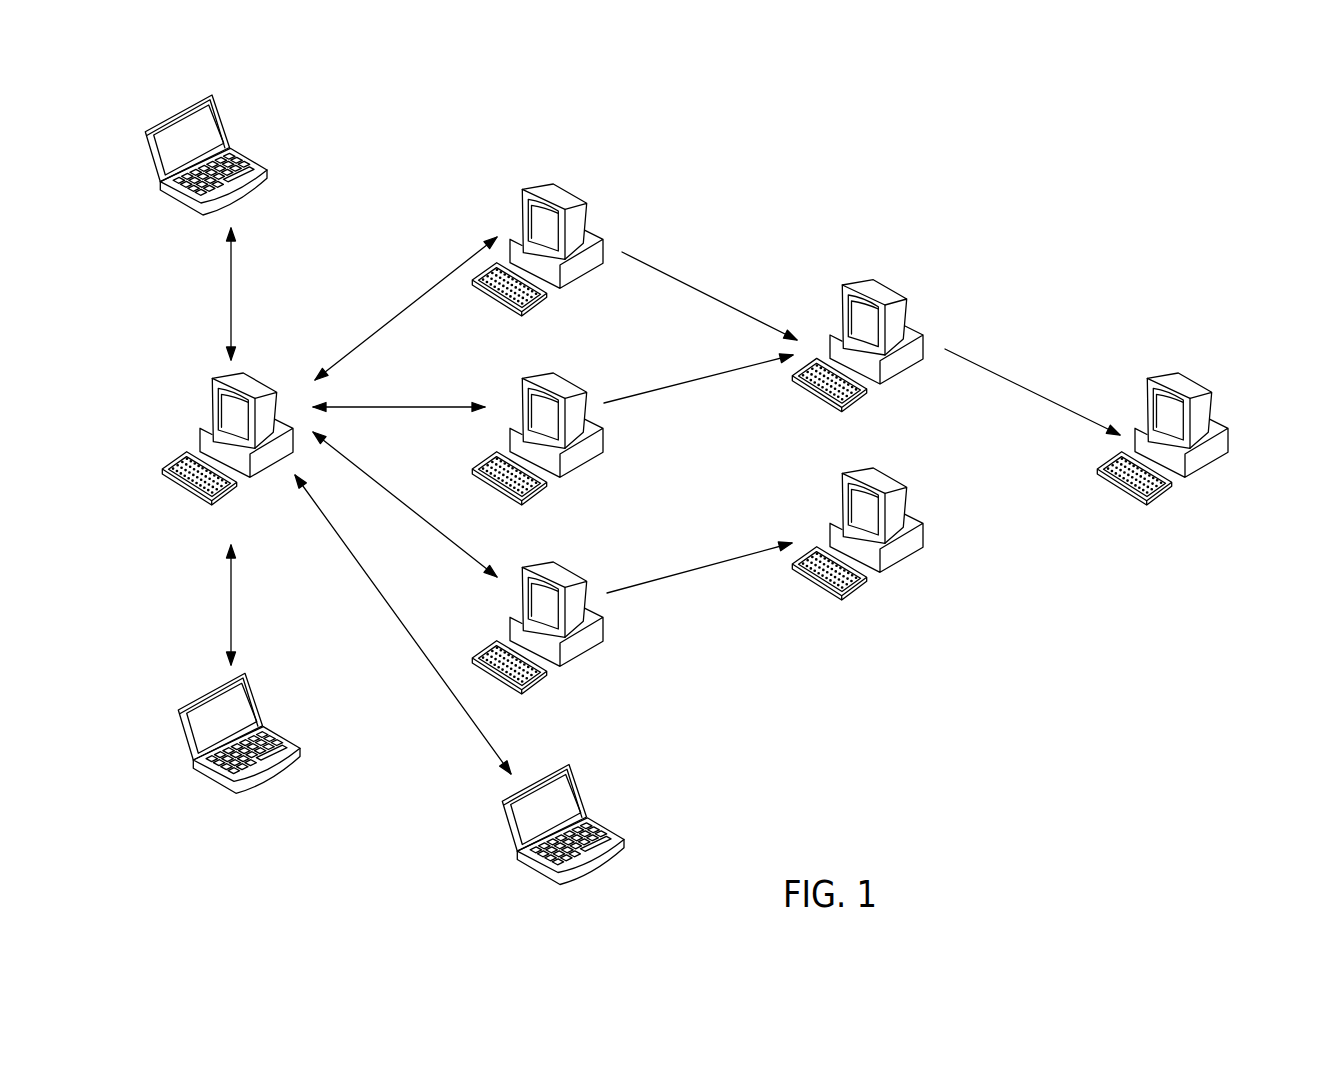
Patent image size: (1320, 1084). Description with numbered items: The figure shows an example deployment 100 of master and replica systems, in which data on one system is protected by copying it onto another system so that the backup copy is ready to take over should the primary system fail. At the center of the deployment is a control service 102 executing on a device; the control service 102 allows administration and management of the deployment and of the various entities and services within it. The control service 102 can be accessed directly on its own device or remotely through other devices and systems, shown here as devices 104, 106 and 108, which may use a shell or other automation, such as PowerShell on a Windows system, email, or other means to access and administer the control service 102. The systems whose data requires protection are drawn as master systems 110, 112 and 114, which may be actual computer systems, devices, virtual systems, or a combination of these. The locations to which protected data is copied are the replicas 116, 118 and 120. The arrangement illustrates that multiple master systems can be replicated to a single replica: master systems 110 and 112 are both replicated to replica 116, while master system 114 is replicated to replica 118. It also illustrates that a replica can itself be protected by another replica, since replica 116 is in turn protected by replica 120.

The deployment 100 is at (1034, 200).
The control service 102 is at (262, 380).
The device 104 is at (253, 155).
The device 106 is at (283, 733).
The device 108 is at (605, 825).
The master system 110 is at (550, 252).
The master system 112 is at (551, 441).
The master system 114 is at (552, 630).
The replica 116 is at (872, 348).
The replica 118 is at (872, 536).
The replica 120 is at (1179, 441).